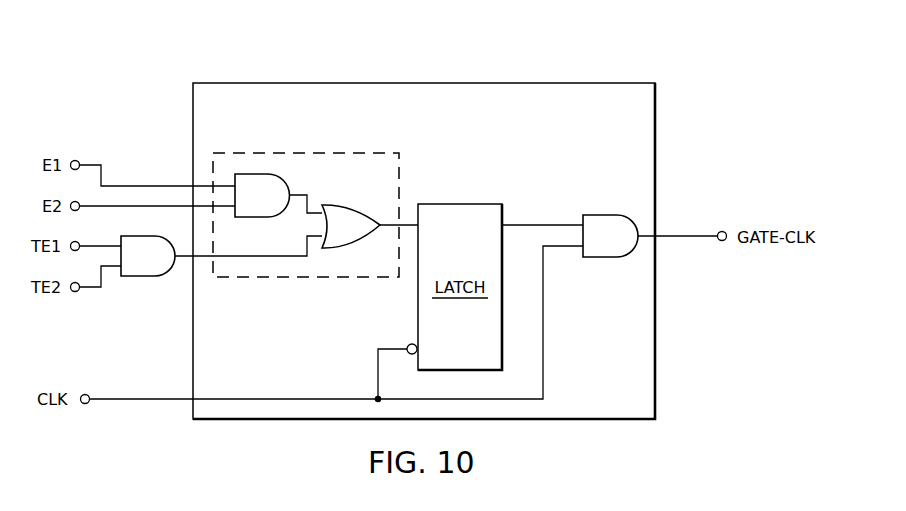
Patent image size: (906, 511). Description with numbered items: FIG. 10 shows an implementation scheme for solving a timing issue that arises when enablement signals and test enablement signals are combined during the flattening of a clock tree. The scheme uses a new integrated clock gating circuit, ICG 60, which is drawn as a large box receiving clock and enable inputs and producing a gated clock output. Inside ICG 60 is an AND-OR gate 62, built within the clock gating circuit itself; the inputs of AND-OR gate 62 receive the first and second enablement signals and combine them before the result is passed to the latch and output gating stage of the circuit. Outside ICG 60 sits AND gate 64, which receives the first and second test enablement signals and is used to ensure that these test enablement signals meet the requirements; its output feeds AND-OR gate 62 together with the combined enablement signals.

The ICG 60 is at (320, 78).
The AND-OR gate 62 is at (265, 148).
The AND gate 64 is at (137, 279).